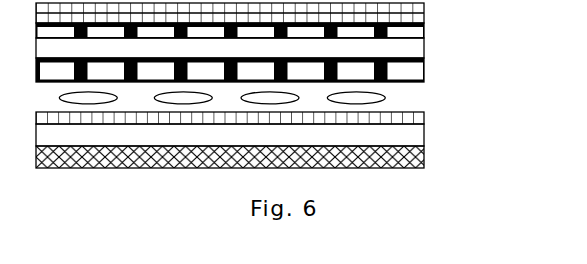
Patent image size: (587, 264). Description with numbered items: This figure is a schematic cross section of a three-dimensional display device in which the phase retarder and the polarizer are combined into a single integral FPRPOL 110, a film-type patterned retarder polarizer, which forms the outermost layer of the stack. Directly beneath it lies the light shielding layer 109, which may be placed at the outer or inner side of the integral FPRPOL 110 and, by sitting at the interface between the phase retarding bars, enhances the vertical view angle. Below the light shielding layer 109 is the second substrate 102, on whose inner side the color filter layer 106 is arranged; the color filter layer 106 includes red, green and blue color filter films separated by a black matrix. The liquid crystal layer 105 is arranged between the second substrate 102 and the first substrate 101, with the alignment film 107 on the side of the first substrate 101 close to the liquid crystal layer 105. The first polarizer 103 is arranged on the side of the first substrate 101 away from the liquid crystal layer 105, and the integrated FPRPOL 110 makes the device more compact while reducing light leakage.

The integral FPRPOL 110 is at (424, 13).
The light shielding layer 109 is at (422, 30).
The second substrate 102 is at (413, 50).
The color filter layer 106 is at (415, 71).
The liquid crystal layer 105 is at (412, 97).
The alignment film 107 is at (425, 117).
The first substrate 101 is at (422, 133).
The first polarizer 103 is at (425, 158).